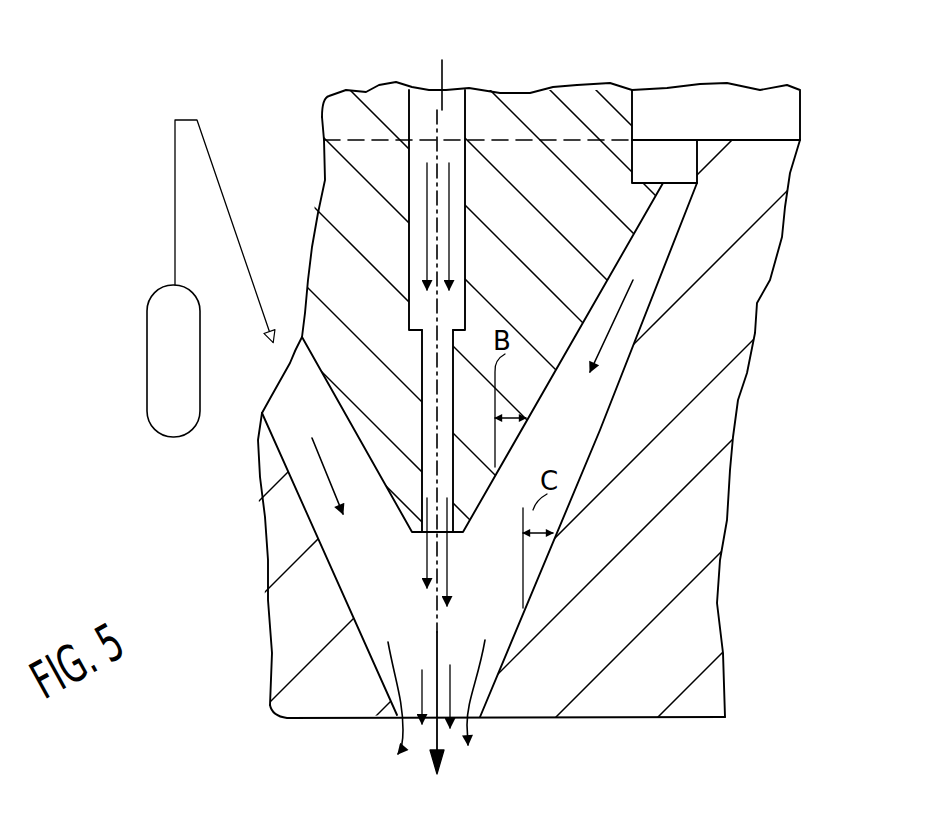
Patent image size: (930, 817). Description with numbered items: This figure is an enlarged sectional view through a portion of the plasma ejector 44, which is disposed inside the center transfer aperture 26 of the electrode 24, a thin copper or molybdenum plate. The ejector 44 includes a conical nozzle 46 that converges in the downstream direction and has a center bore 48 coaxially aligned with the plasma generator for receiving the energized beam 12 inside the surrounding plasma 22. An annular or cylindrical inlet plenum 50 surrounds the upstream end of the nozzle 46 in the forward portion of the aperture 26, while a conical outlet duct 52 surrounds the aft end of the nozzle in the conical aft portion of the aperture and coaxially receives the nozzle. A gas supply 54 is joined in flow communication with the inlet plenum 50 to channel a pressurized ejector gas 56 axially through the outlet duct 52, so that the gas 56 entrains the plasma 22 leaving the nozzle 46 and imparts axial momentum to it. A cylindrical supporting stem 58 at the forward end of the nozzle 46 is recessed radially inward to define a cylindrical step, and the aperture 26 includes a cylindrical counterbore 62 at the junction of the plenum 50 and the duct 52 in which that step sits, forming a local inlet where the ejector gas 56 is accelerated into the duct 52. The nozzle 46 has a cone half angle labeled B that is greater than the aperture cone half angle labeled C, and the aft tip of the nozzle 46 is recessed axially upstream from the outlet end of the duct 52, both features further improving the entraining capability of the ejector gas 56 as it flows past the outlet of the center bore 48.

The beam 12 is at (444, 75).
The plasma 22 is at (450, 195).
The electrode 24 is at (702, 553).
The center transfer orifice or aperture 26 is at (596, 416).
The plasma eductor or ejector 44 is at (726, 281).
The conical tip or nozzle 46 is at (594, 287).
The center bore 48 is at (427, 378).
The inlet plenum 50 is at (778, 131).
The conical outlet channel or duct 52 is at (386, 567).
The gas supply 54 is at (147, 326).
The ejector gas 56 is at (674, 154).
The cylindrical supporting stem 58 is at (648, 92).
The cylindrical counterbore 62 is at (683, 173).